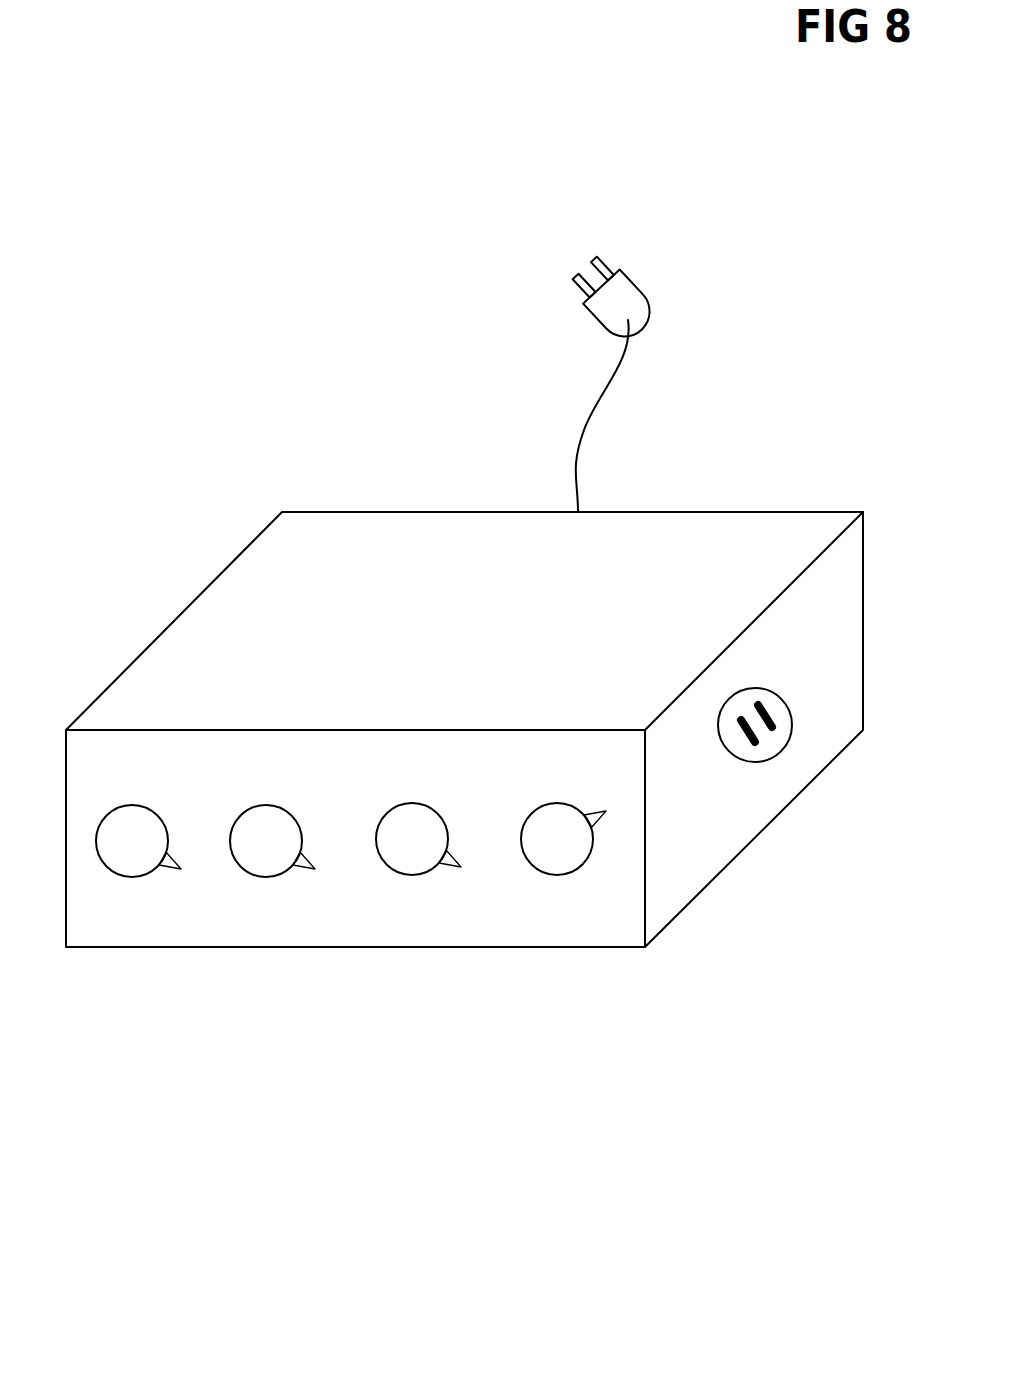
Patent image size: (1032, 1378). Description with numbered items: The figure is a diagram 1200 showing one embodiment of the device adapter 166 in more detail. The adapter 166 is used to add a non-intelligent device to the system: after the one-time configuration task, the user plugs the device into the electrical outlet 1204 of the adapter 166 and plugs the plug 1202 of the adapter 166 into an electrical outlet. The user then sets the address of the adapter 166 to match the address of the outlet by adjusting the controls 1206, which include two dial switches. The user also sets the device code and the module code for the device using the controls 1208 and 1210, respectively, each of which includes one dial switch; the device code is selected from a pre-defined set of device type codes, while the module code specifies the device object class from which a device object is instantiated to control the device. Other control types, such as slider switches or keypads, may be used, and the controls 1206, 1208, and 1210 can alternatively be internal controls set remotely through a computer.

The device adapter 166 is at (130, 664).
The diagram 1200 is at (399, 1184).
The plug 1202 is at (644, 291).
The electrical outlet 1204 is at (792, 733).
The controls 1206 is at (333, 912).
The controls 1208 is at (412, 938).
The controls 1210 is at (560, 938).